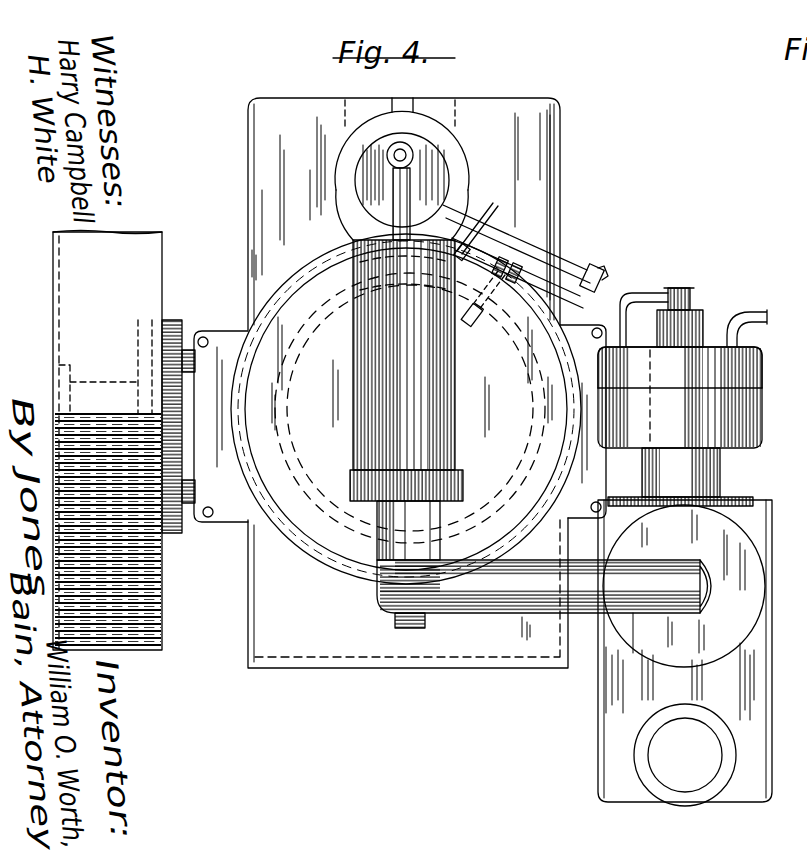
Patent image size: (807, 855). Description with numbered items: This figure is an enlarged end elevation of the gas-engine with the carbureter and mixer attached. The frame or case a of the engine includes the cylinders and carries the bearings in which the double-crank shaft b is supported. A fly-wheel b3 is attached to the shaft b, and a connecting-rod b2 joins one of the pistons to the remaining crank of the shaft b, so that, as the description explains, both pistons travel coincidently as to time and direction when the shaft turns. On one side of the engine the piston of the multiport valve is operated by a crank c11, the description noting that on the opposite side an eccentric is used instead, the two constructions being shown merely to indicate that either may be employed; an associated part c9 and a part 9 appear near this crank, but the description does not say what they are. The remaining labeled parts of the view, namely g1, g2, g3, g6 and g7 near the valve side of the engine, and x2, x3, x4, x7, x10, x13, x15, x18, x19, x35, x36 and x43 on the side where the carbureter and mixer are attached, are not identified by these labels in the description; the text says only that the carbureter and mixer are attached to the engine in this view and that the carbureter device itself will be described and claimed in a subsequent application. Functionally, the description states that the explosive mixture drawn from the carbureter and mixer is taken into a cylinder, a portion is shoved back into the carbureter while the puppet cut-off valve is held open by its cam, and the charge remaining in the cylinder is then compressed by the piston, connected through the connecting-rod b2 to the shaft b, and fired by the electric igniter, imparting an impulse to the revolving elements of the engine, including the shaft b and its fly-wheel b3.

The frame or case a is at (250, 157).
The eccentric disk 9 is at (450, 177).
The eccentric c9 is at (433, 162).
The crank c11 is at (403, 155).
The cylinder neck x18 is at (393, 537).
The horizontal pipe x15 is at (531, 599).
The pipe end x4 is at (718, 580).
The drain fitting x19 is at (403, 630).
The housing casing x3 is at (757, 675).
The circular boss x2 is at (765, 590).
The lower opening x7 is at (660, 775).
The cylindrical chamber x10 is at (765, 410).
The chamber cap x13 is at (763, 360).
The valve fitting x35 is at (690, 293).
The bent pipe x36 is at (642, 304).
The outlet pipe x43 is at (758, 303).
The double-crank shaft b is at (52, 418).
The connecting-rod b2 is at (187, 302).
The fly-wheel b3 is at (80, 212).
The inclined tube g1 is at (507, 229).
The tube end cap g2 is at (597, 266).
The second tube with couplings g7 is at (543, 248).
The connecting rod g3 is at (466, 260).
The lower fitting g6 is at (470, 330).